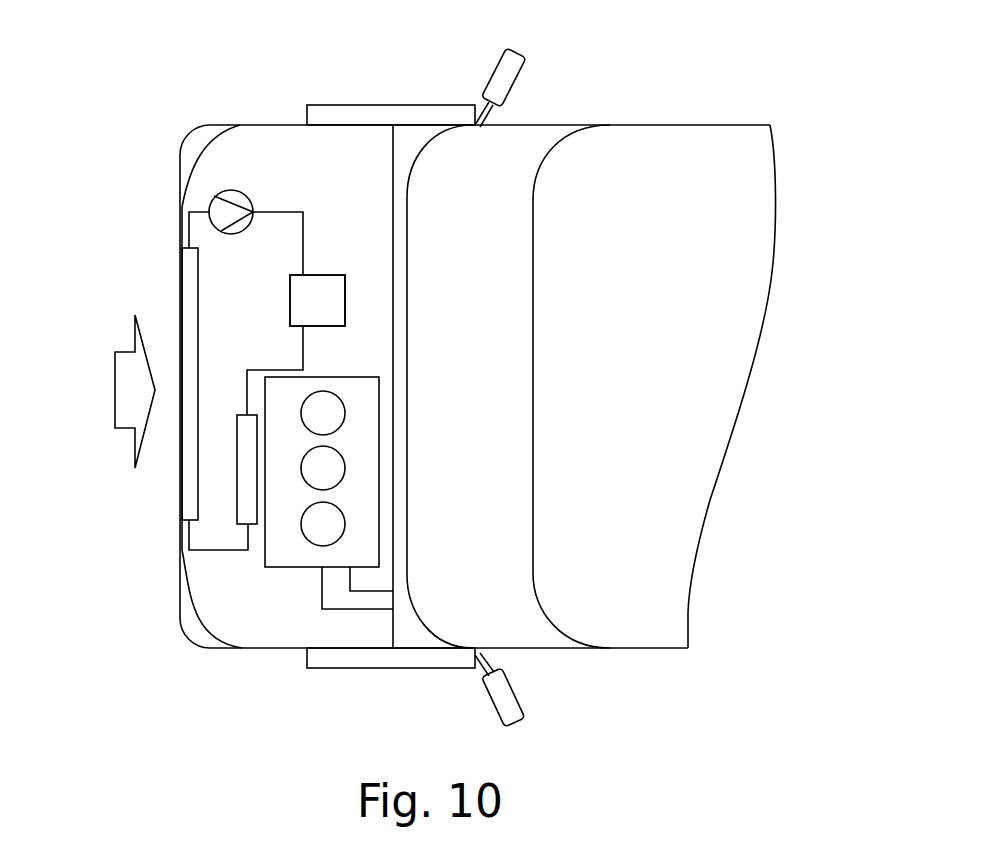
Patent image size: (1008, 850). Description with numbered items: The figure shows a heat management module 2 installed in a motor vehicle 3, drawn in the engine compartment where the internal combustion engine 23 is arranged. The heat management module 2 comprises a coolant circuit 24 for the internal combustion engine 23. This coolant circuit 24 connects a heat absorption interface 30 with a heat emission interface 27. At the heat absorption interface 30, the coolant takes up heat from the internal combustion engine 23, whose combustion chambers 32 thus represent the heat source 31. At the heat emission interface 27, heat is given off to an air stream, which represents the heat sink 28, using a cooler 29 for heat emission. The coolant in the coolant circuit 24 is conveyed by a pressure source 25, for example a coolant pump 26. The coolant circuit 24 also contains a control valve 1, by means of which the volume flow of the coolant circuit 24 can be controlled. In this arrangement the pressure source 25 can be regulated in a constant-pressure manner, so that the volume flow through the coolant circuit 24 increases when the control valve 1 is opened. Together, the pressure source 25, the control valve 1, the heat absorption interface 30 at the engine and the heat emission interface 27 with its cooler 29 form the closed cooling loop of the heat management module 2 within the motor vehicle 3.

The control valve 1 is at (337, 275).
The heat management module 2 is at (168, 62).
The motor vehicle 3 is at (654, 118).
The internal combustion engine 23 is at (319, 553).
The coolant circuit 24 is at (287, 207).
The pressure source 25 is at (247, 140).
The coolant pump 26 is at (225, 189).
The heat emission interface 27 is at (120, 383).
The heat sink 28 is at (131, 420).
The cooler 29 is at (190, 298).
The heat absorption interface 30 is at (249, 518).
The heat source 31 is at (315, 569).
The combustion chambers 32 is at (333, 546).